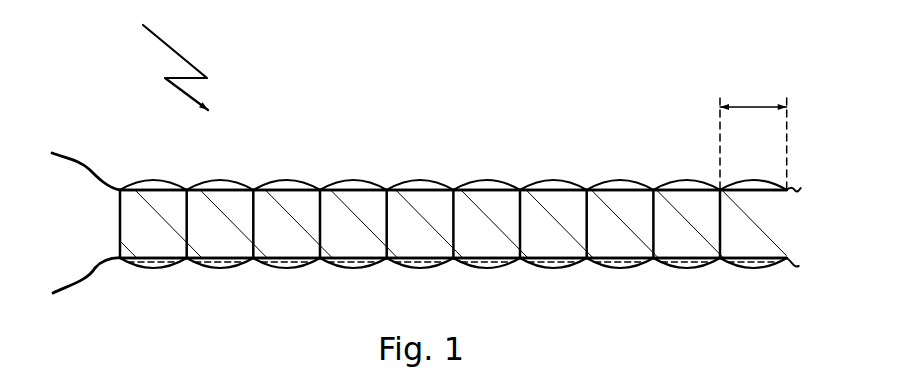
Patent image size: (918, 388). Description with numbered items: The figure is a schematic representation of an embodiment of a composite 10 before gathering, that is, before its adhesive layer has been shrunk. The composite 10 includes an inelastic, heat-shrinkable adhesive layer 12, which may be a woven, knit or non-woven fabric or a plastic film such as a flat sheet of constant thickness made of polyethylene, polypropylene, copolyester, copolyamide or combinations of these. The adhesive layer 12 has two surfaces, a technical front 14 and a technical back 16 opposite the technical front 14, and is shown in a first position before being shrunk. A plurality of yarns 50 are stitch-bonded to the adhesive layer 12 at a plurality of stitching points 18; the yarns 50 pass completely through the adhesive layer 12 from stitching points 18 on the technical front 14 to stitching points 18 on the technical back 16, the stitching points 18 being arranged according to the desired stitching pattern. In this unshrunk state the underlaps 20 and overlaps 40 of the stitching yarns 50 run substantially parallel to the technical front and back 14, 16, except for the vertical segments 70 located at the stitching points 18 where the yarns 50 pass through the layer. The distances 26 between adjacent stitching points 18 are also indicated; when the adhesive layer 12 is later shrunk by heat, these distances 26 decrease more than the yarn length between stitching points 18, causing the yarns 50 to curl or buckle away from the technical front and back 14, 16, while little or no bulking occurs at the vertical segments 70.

The composite 10 is at (166, 56).
The adhesive layer 12 is at (132, 225).
The technical front 14 is at (150, 253).
The technical back 16 is at (136, 192).
The stitching points 18 is at (253, 190).
The underlaps 20 is at (355, 178).
The distances 26 is at (753, 135).
The overlaps 40 is at (273, 266).
The yarns 50 is at (87, 158).
The vertical segments 70 is at (453, 223).